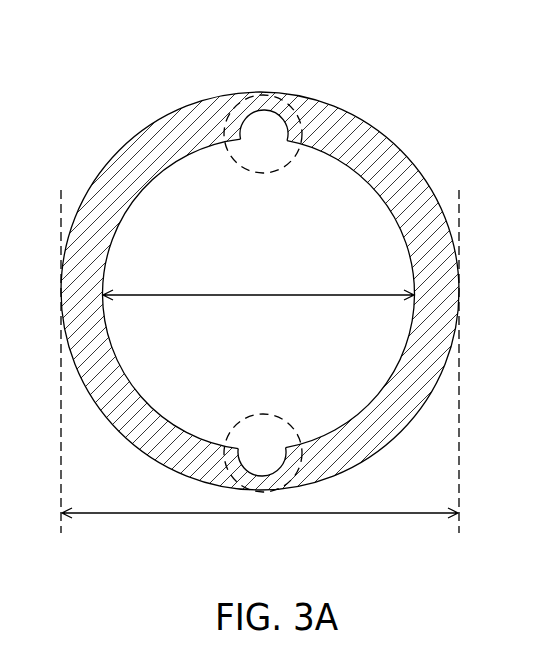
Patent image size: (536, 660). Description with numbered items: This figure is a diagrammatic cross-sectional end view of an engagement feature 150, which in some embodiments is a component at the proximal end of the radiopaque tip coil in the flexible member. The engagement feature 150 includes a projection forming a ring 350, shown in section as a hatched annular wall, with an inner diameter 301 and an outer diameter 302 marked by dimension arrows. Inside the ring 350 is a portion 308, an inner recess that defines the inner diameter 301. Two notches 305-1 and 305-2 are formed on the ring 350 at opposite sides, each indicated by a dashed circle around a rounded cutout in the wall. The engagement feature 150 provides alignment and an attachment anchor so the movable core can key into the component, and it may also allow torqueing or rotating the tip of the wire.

The engagement feature 150 is at (230, 78).
The ring 350 is at (137, 157).
The portion 308 is at (282, 347).
The notch 305-1 is at (283, 97).
The notch 305-2 is at (262, 414).
The inner diameter 301 is at (283, 295).
The outer diameter 302 is at (260, 376).